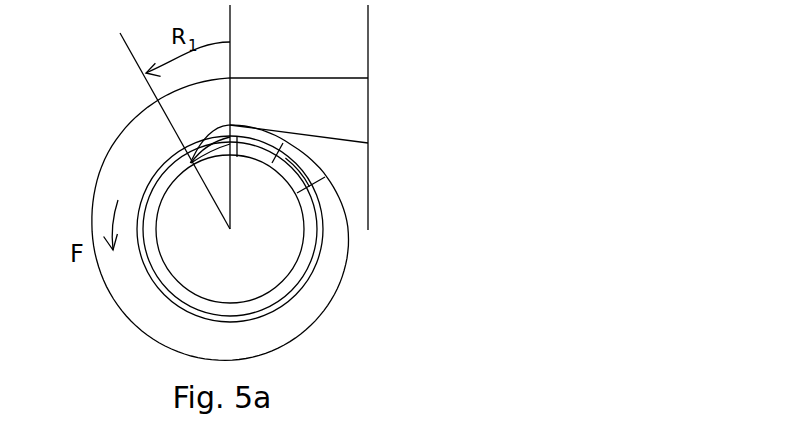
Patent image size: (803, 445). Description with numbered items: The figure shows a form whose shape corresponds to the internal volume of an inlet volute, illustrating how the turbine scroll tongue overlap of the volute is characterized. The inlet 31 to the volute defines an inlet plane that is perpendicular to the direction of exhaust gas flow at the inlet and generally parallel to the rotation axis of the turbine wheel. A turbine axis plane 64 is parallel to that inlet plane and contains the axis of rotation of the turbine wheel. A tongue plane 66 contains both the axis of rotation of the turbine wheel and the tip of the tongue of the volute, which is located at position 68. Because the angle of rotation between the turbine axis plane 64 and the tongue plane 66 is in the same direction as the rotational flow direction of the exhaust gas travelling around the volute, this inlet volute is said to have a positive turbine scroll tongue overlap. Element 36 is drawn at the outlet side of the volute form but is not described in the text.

The turbine axis plane 64 is at (231, 68).
The tongue plane 66 is at (134, 59).
The position of the tongue tip 68 is at (191, 163).
The outlet flange 36 is at (369, 213).
The inlet 31 is at (380, 119).